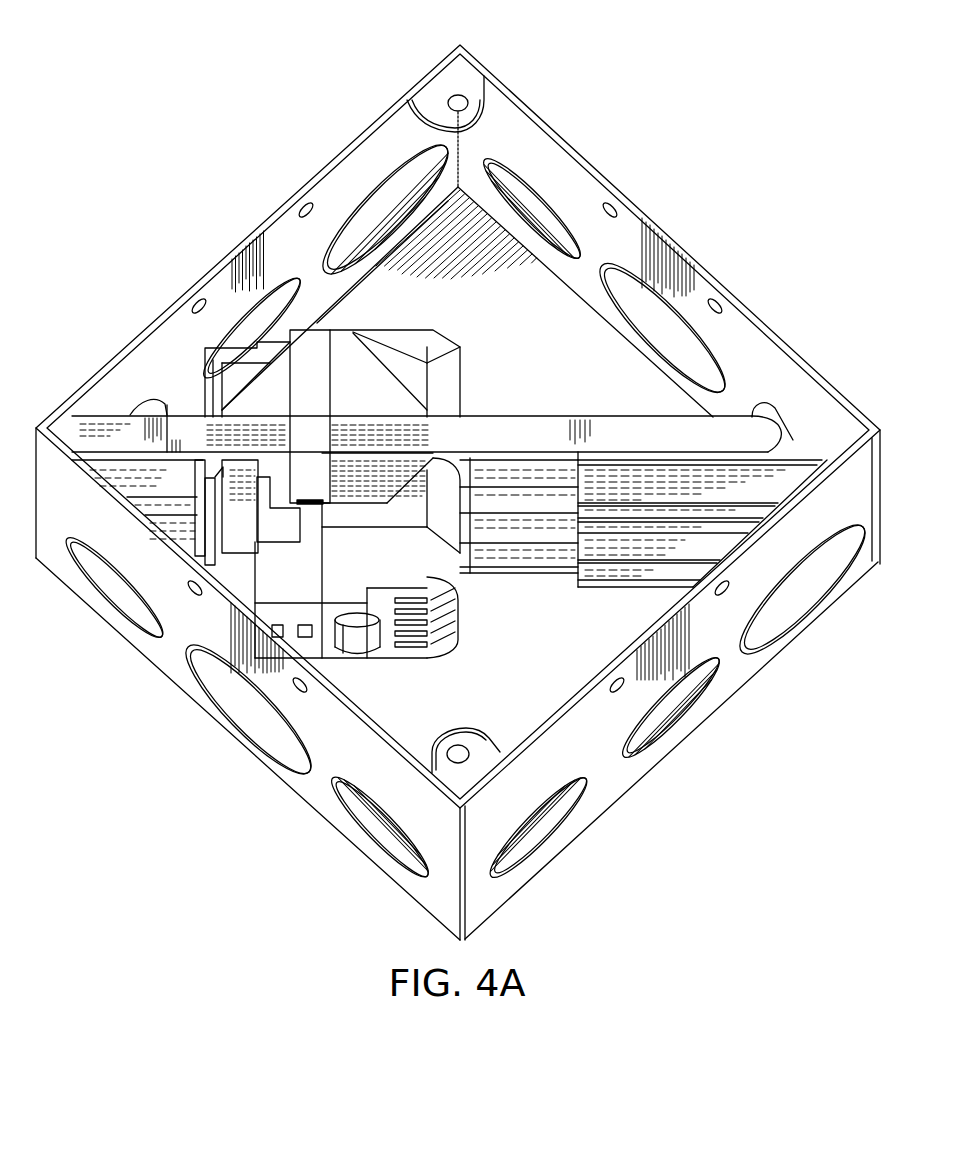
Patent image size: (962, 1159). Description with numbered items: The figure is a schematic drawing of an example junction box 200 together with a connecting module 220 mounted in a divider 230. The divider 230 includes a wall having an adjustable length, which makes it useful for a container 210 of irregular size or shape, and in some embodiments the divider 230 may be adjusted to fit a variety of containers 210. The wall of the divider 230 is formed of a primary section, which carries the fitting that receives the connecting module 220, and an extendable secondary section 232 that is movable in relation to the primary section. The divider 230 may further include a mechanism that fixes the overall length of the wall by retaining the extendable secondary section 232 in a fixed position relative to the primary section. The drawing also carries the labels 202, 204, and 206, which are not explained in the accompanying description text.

The junction box 200 is at (742, 196).
The first compartment 202 is at (478, 331).
The second compartment 204 is at (508, 672).
The mounting tab 206 is at (450, 92).
The container 210 is at (750, 680).
The connecting module 220 is at (404, 342).
The divider 230 is at (515, 422).
The extendable secondary section 232 is at (650, 556).